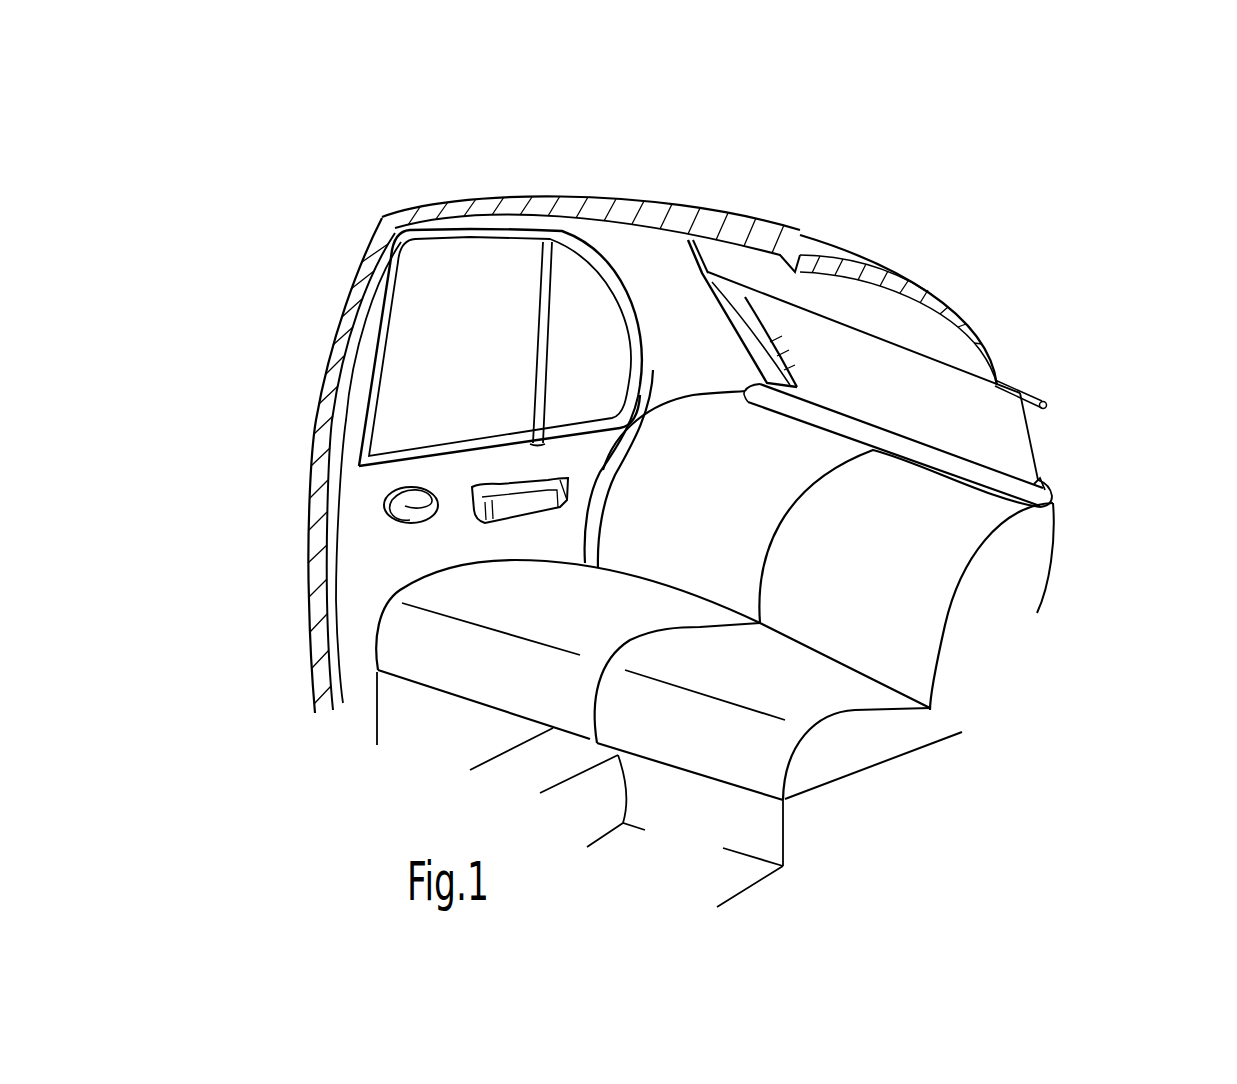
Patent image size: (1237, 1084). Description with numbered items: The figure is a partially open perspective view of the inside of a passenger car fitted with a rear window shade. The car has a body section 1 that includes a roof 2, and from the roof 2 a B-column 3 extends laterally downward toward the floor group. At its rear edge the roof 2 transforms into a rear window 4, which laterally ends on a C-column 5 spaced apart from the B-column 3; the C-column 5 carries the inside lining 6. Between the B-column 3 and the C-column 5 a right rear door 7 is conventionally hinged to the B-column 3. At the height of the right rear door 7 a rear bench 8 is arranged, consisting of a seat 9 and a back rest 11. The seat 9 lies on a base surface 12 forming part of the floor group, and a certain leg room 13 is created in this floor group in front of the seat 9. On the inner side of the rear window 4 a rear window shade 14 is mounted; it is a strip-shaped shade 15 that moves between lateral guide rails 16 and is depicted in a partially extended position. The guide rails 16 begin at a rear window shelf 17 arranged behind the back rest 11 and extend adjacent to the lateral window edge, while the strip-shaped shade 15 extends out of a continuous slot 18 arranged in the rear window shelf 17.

The body section 1 is at (975, 194).
The roof 2 is at (570, 202).
The B-column 3 is at (330, 399).
The rear window 4 is at (917, 318).
The C-column 5 is at (658, 280).
The inside lining 6 is at (690, 347).
The right rear door 7 is at (378, 590).
The rear bench 8 is at (1003, 675).
The seat 9 is at (837, 743).
The back rest 11 is at (1013, 577).
The base surface 12 is at (787, 833).
The leg room 13 is at (442, 767).
The rear window shade 14 is at (1083, 407).
The strip-shaped shade 15 is at (936, 426).
The lateral guide rails 16 is at (730, 323).
The rear window shelf 17 is at (1040, 500).
The continuous slot 18 is at (1042, 480).